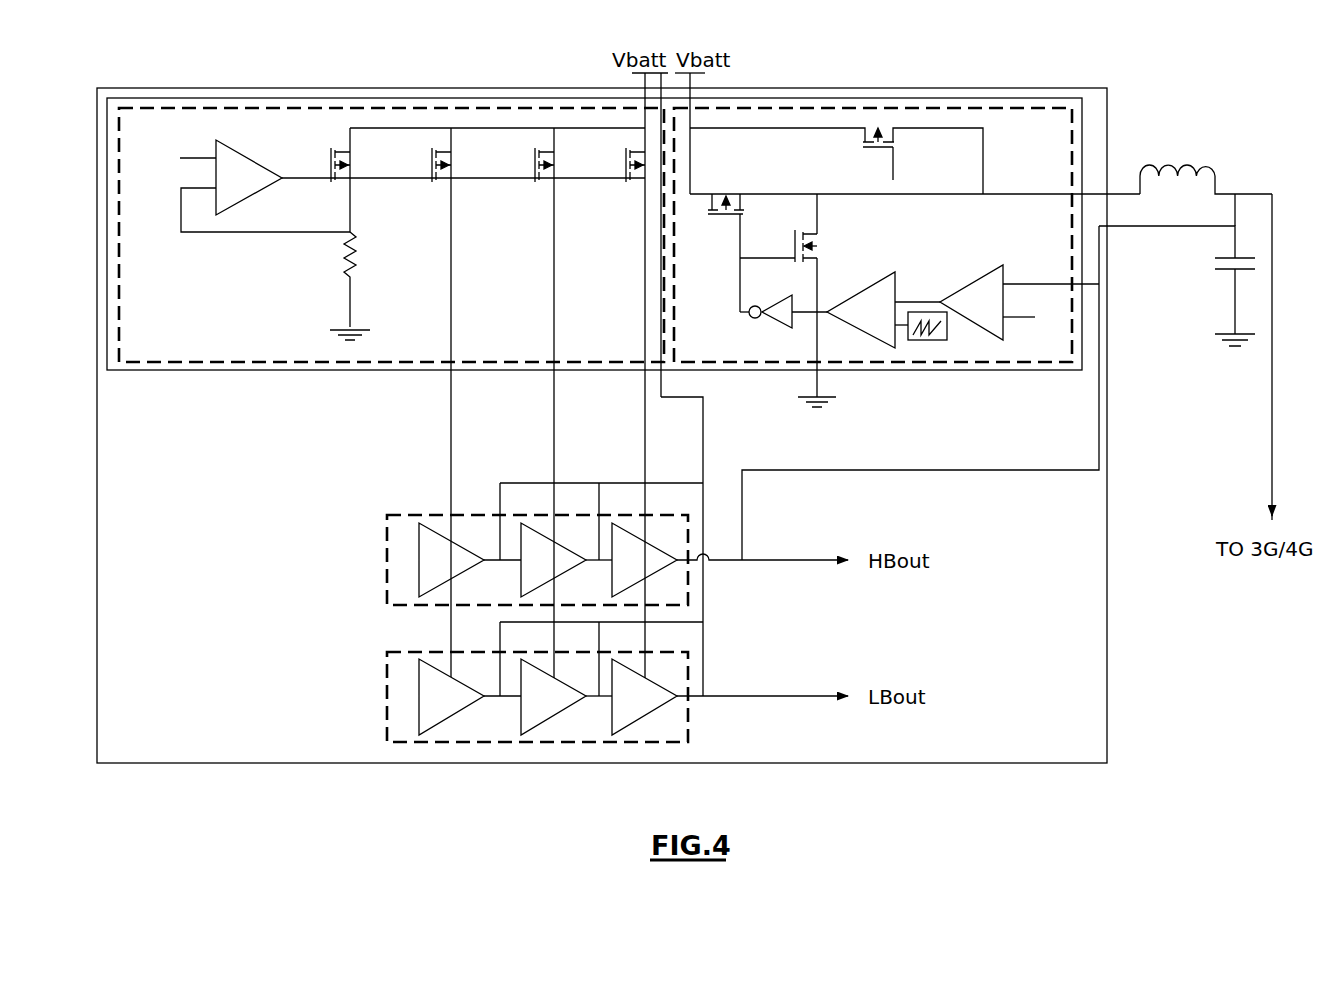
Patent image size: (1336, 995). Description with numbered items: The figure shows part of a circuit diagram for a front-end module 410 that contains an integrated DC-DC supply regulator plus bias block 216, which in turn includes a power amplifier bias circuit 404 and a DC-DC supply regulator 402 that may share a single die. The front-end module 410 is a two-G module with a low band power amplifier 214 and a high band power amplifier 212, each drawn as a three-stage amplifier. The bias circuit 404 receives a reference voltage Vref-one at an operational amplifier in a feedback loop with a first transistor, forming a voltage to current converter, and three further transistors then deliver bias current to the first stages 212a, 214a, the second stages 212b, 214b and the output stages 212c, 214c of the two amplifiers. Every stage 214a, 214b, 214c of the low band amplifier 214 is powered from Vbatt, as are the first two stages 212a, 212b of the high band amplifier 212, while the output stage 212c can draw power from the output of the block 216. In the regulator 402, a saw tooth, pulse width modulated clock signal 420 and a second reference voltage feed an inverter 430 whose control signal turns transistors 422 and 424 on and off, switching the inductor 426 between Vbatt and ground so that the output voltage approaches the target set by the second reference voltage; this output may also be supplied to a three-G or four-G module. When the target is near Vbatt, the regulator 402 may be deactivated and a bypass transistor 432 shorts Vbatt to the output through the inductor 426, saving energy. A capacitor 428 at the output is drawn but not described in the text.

The integrated DC-DC supply regulator + bias block 216 is at (179, 94).
The power amplifier bias circuit 404 is at (262, 104).
The front-end module 410 is at (956, 85).
The DC-DC supply regulator 402 is at (907, 228).
The bypass transistor 432 is at (902, 148).
The transistor 422 is at (728, 222).
The transistor 424 is at (821, 236).
The inverter 430 is at (774, 324).
The clock signal 420 is at (951, 337).
The inductor 426 is at (1193, 158).
The capacitor 428 is at (1209, 266).
The high band power amplifier 212 is at (482, 524).
The first stage of the high band power amplifier 212a is at (418, 529).
The second stage of the high band power amplifier 212b is at (537, 524).
The output stage of the high band power amplifier 212c is at (627, 524).
The low band power amplifier 214 is at (482, 732).
The first stage of the low band power amplifier 214a is at (437, 732).
The second stage of the low band power amplifier 214b is at (537, 732).
The output stage of the low band power amplifier 214c is at (628, 732).